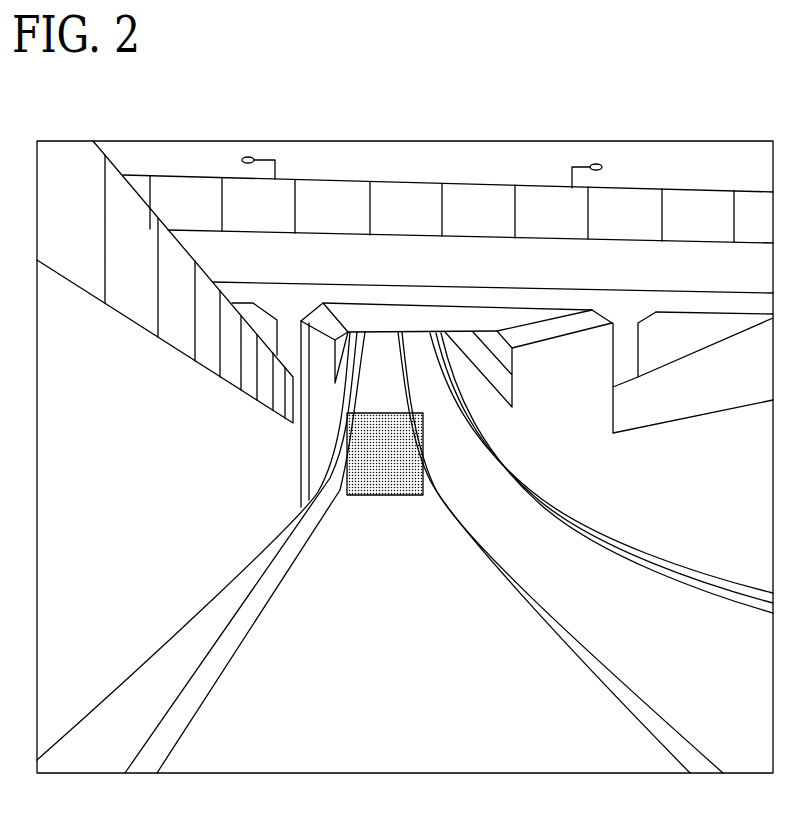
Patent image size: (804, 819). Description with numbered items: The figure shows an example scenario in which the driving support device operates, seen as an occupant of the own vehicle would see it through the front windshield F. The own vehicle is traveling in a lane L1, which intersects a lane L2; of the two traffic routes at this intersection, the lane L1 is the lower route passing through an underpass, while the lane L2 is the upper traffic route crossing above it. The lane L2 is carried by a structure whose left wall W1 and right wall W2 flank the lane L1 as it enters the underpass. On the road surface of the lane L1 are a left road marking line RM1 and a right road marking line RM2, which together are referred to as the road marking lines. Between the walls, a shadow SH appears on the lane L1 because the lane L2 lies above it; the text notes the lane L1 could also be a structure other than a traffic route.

The front windshield F is at (402, 141).
The lane L2 is at (421, 276).
The lane L1 is at (392, 746).
The left wall W1 is at (317, 443).
The right wall W2 is at (573, 481).
The shadow SH is at (396, 495).
The left road marking line RM1 is at (242, 636).
The right road marking line RM2 is at (566, 634).